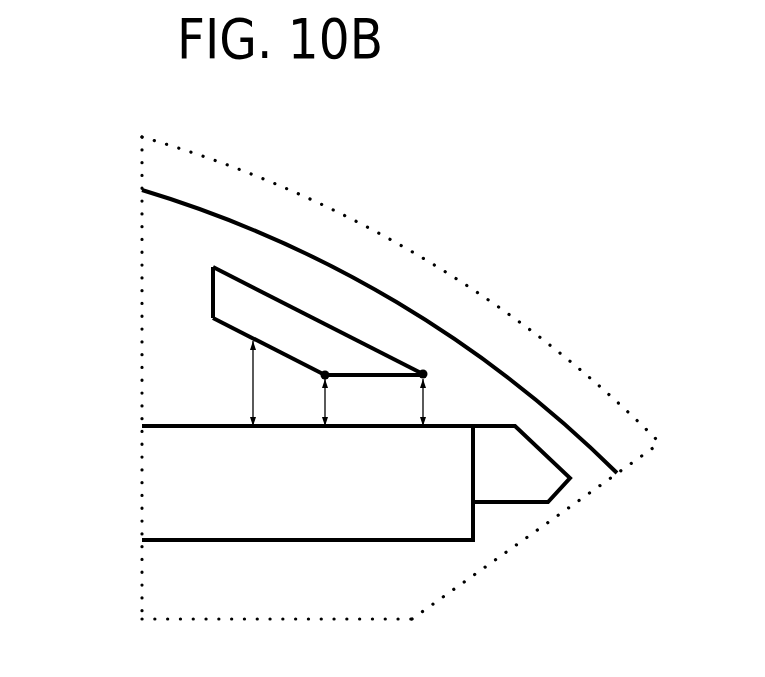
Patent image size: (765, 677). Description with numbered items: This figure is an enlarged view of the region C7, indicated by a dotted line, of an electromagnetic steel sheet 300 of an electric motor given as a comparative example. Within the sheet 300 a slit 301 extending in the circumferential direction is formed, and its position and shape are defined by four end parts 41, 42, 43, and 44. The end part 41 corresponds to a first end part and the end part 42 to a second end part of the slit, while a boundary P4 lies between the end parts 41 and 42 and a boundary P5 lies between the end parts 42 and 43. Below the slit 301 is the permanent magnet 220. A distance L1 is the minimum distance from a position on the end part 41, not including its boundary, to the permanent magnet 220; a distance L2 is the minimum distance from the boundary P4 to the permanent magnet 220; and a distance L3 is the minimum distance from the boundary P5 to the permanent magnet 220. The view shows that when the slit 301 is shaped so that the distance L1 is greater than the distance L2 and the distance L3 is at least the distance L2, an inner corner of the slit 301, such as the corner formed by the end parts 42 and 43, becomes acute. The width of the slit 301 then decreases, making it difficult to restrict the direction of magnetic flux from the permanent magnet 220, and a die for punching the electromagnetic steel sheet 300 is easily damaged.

The electromagnetic steel sheet 300 is at (232, 220).
The slit 301 is at (243, 316).
The end part 41 is at (213, 318).
The end part 42 is at (362, 376).
The end part 43 is at (270, 297).
The end part 44 is at (213, 296).
The boundary P4 is at (325, 371).
The boundary P5 is at (423, 370).
The distance L1 is at (253, 370).
The distance L2 is at (325, 405).
The distance L3 is at (430, 400).
The permanent magnet 220 is at (286, 527).
The region C7 is at (448, 273).